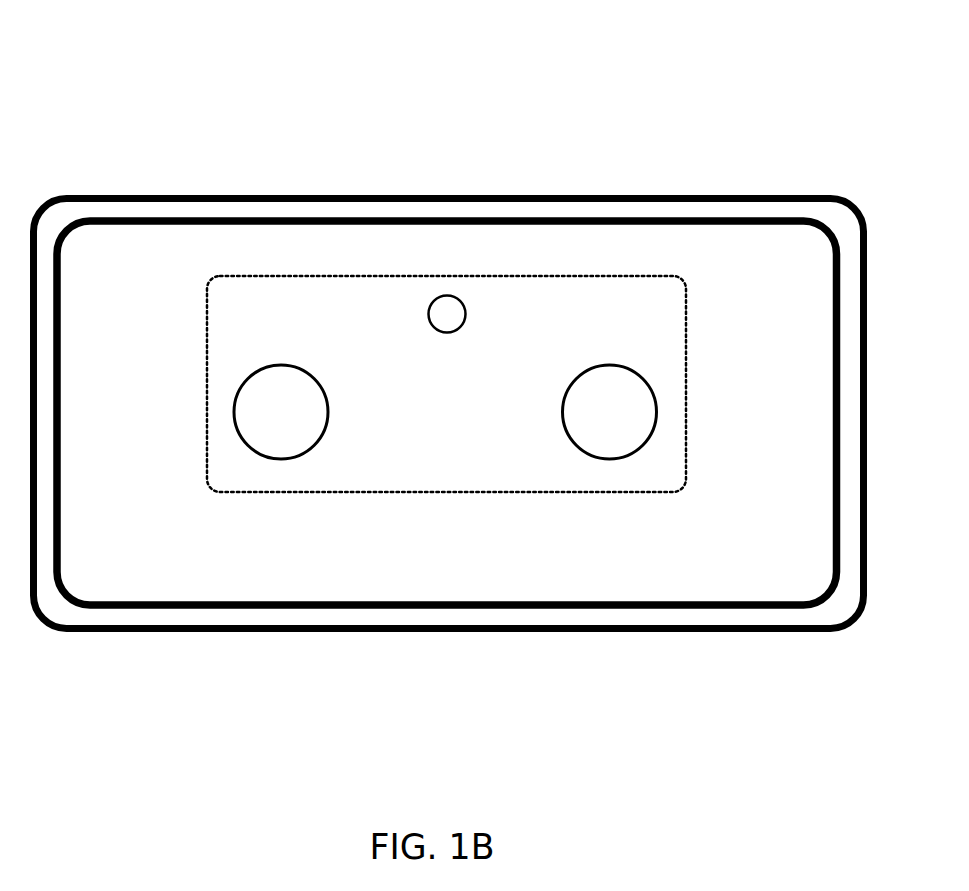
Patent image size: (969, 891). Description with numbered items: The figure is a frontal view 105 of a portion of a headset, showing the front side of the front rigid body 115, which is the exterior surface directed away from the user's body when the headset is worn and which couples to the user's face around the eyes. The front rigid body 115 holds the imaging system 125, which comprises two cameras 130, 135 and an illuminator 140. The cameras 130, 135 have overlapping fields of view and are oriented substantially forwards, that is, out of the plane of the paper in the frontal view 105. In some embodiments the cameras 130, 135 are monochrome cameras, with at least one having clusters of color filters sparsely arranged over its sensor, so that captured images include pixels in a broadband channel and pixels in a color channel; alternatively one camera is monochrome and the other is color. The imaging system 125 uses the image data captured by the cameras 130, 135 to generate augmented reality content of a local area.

The frontal view 105 is at (420, 34).
The front rigid body 115 is at (424, 566).
The imaging system 125 is at (548, 273).
The camera 130 is at (235, 413).
The camera 135 is at (655, 413).
The illuminator 140 is at (445, 296).